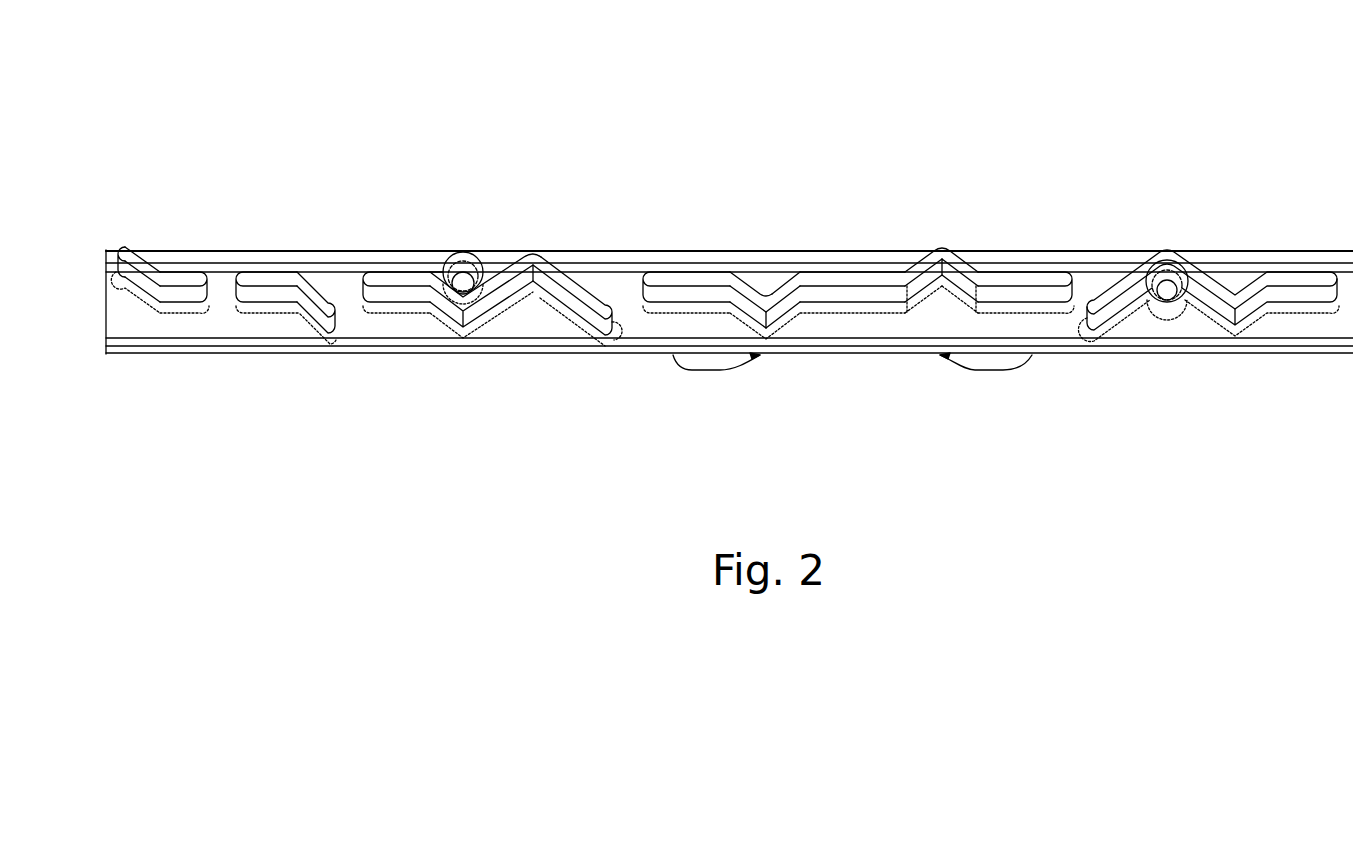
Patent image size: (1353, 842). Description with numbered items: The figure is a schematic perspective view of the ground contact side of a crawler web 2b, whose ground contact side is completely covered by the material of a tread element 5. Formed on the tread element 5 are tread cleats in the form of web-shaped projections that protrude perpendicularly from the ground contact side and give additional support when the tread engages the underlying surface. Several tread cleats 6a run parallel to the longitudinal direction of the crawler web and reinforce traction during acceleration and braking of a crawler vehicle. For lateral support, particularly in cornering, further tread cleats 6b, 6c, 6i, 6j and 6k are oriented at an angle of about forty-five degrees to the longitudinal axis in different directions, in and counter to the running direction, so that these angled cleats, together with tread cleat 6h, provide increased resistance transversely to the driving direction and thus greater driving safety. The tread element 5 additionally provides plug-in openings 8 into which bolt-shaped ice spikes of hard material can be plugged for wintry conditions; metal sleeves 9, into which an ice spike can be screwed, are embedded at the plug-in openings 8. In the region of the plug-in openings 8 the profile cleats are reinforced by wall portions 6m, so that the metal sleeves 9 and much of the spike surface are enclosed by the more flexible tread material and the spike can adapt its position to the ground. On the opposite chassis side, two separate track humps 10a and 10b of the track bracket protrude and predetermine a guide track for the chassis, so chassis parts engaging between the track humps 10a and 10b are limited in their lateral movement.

The crawler web 2b is at (350, 128).
The tread element 5 is at (408, 355).
The tread cleats 6a is at (193, 280).
The tread cleat 6b is at (742, 290).
The tread cleat 6c is at (780, 290).
The tread cleat 6h is at (577, 290).
The tread cleat 6i is at (508, 270).
The tread cleat 6j is at (320, 292).
The tread cleat 6k is at (138, 255).
The wall portions 6m is at (462, 264).
The plug-in openings 8 is at (465, 280).
The metal sleeves 9 is at (470, 262).
The track hump 10a is at (705, 363).
The track hump 10b is at (1000, 363).